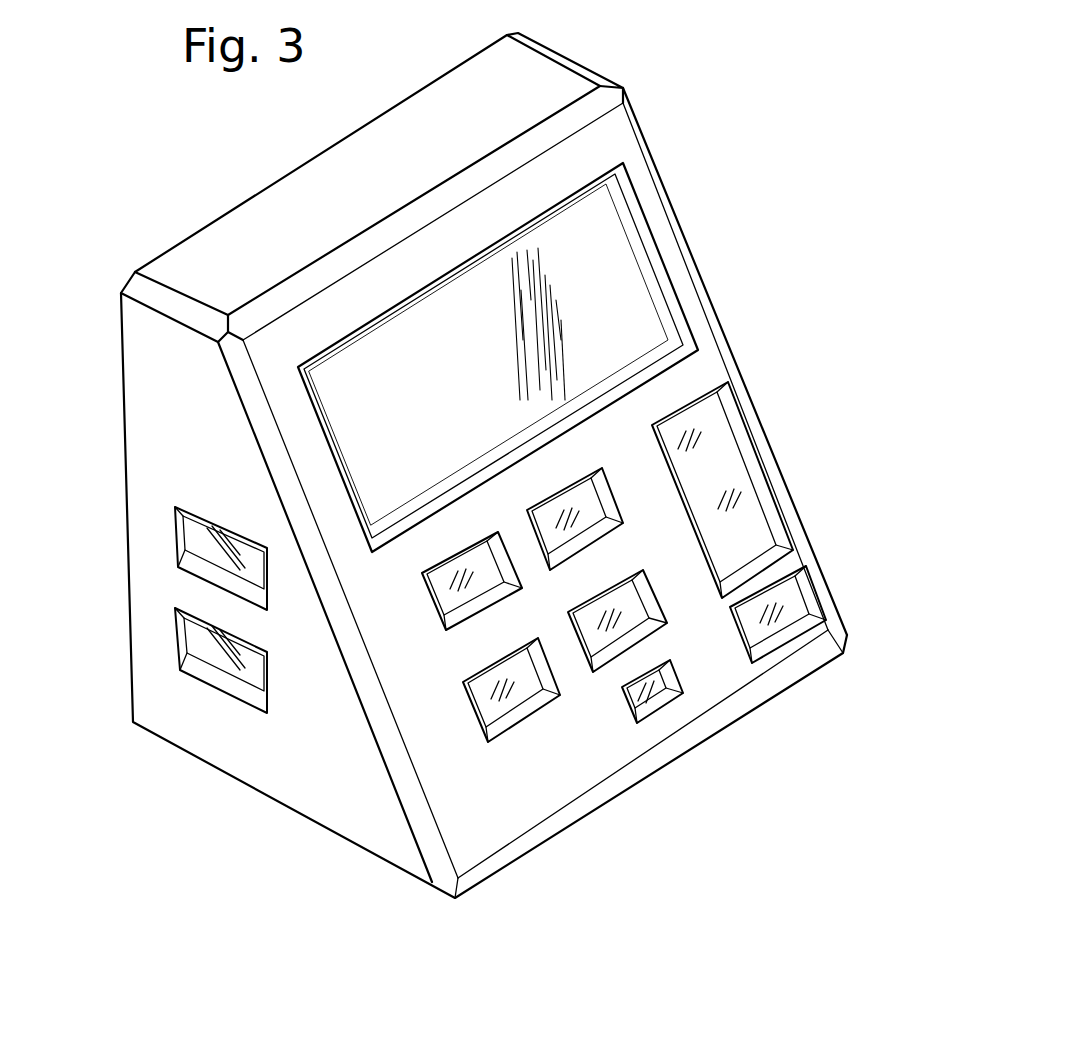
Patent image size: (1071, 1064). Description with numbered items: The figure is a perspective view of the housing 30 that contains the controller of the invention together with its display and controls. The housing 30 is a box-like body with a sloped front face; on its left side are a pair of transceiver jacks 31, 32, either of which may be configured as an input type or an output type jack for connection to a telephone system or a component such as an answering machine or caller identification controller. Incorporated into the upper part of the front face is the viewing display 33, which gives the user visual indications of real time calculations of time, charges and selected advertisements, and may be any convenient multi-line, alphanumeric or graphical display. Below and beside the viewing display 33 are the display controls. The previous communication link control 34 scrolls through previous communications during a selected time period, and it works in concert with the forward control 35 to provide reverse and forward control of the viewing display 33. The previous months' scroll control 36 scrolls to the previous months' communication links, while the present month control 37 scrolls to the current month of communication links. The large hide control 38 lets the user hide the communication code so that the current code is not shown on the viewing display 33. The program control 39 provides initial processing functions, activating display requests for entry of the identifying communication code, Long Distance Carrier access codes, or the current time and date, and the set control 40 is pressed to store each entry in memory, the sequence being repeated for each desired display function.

The housing 30 is at (712, 355).
The transceiver jack 31 is at (178, 508).
The transceiver jack 32 is at (193, 672).
The viewing display 33 is at (612, 247).
The previous communication link control 34 is at (450, 595).
The forward control 35 is at (612, 490).
The previous months' scroll control 36 is at (537, 712).
The present month control 37 is at (650, 620).
The hide control 38 is at (778, 470).
The program control 39 is at (800, 627).
The set control 40 is at (650, 718).